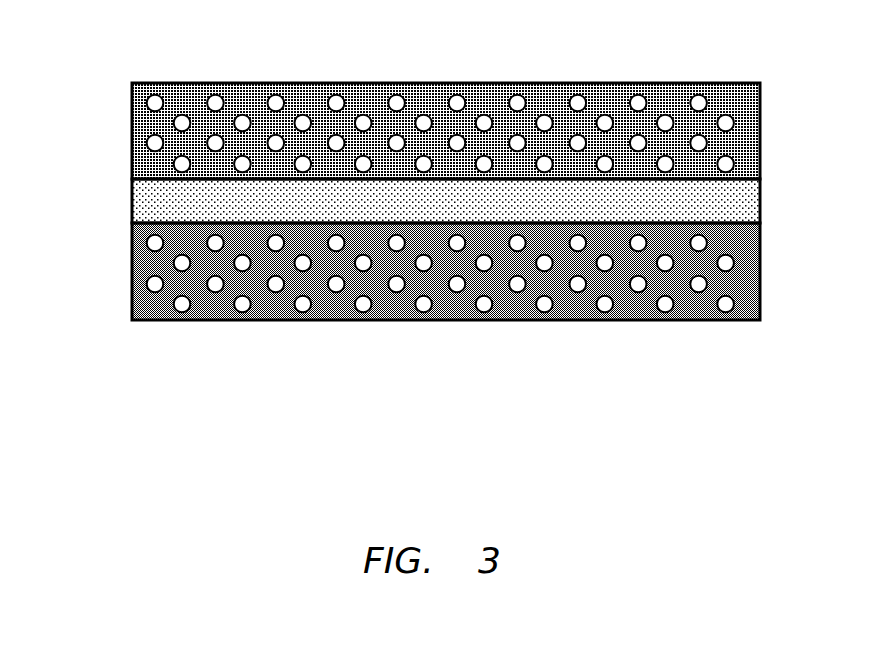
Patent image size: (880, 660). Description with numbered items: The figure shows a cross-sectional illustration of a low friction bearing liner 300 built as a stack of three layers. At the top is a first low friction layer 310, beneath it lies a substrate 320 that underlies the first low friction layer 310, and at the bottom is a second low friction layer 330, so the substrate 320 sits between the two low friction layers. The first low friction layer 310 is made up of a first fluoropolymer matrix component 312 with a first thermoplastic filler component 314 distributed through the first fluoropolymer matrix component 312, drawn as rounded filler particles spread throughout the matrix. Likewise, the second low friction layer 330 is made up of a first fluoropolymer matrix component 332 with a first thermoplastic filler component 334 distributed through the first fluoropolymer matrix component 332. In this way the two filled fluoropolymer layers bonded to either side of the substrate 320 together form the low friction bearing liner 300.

The low friction bearing liner 300 is at (396, 241).
The first low friction layer 310 is at (396, 99).
The first fluoropolymer matrix component 312 is at (485, 98).
The first thermoplastic filler component 314 is at (273, 96).
The substrate 320 is at (130, 193).
The second low friction layer 330 is at (396, 319).
The first fluoropolymer matrix component 332 is at (334, 307).
The first thermoplastic filler component 334 is at (240, 267).